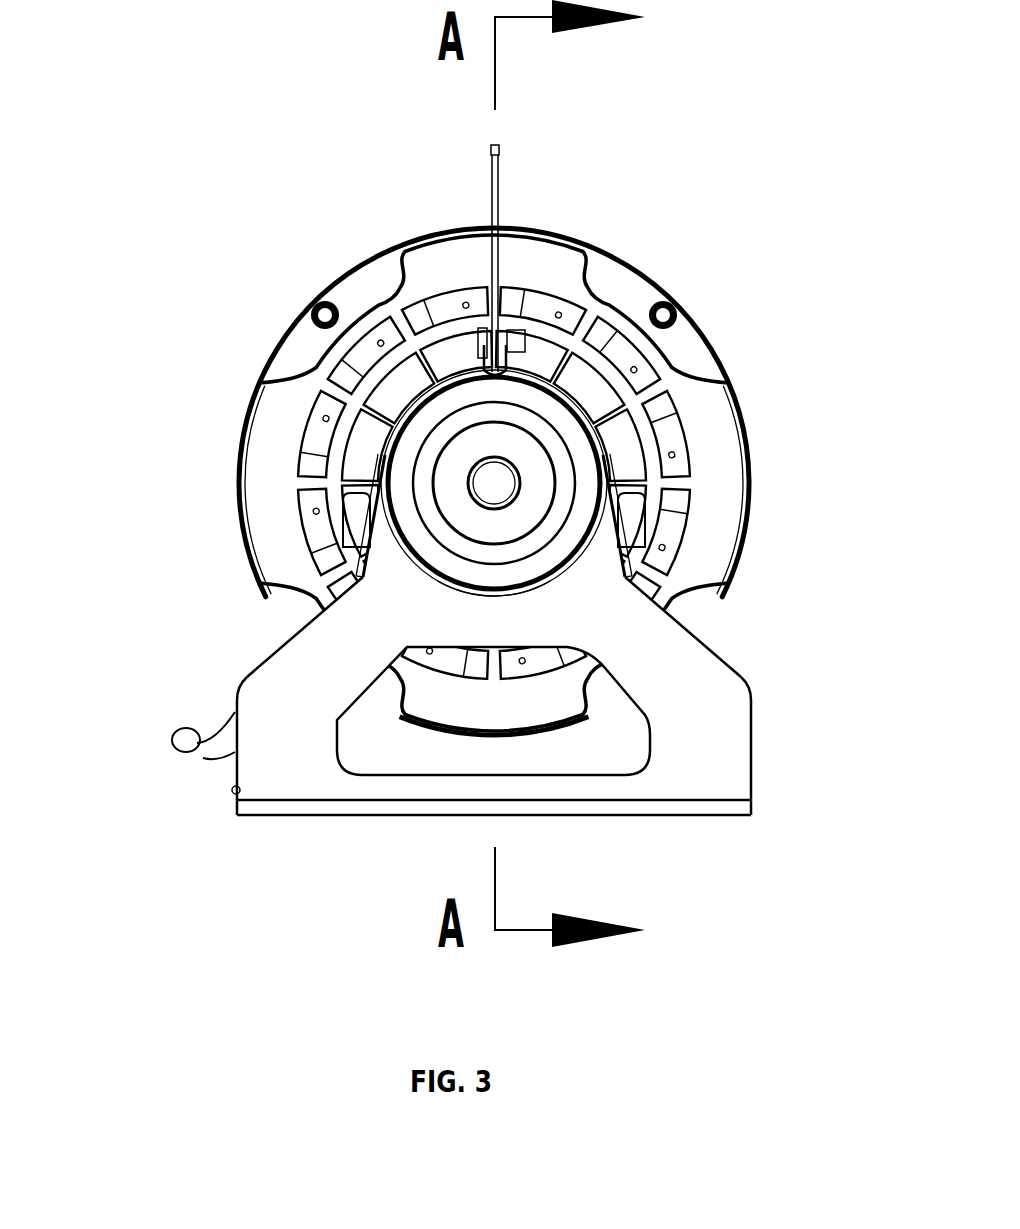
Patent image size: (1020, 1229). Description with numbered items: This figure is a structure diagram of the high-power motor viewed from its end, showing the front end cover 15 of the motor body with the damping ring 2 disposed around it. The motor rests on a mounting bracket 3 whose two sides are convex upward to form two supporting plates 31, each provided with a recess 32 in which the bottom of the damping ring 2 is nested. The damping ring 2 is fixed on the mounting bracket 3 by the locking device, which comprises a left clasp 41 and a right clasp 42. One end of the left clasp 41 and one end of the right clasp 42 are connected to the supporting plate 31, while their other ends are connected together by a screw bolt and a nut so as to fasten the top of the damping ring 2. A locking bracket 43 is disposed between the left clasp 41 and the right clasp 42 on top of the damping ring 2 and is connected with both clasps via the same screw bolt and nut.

The damping ring 2 is at (567, 410).
The mounting bracket 3 is at (587, 818).
The supporting plate 31 is at (636, 644).
The recess 32 is at (472, 597).
The front end cover 15 is at (307, 384).
The left clasp 41 is at (385, 488).
The right clasp 42 is at (604, 490).
The locking bracket 43 is at (499, 216).